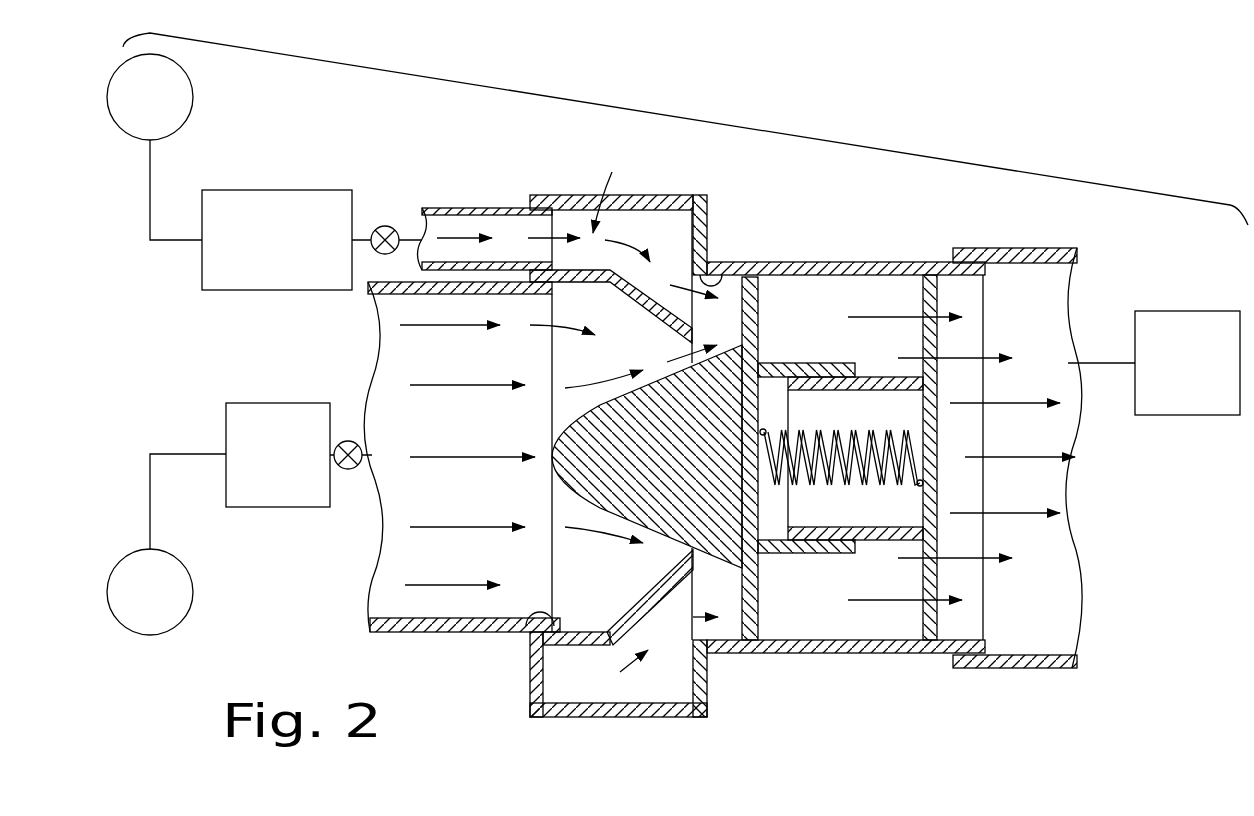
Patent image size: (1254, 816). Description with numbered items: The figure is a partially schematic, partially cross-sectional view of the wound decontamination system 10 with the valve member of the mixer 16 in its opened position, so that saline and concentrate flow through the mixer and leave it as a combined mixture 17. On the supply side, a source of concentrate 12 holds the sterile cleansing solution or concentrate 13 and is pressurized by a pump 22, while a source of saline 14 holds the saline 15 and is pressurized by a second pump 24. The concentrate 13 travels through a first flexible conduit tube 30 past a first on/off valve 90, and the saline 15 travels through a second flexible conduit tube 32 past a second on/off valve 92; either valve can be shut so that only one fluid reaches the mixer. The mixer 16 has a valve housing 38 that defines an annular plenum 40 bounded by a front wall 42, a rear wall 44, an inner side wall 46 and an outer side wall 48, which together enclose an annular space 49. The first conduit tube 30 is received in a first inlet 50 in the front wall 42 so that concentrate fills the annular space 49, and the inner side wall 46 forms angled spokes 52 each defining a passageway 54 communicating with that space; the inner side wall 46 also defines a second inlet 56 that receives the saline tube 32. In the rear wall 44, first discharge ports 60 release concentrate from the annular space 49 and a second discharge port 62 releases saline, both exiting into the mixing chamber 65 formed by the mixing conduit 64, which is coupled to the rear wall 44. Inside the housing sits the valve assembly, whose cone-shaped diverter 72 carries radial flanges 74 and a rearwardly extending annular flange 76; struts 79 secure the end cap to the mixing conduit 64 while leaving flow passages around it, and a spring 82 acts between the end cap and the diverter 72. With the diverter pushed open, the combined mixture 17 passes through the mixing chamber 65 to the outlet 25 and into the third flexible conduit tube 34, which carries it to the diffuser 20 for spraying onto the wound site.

The system 10 is at (688, 119).
The source of concentrate 12 is at (330, 190).
The concentrate 13 is at (462, 238).
The source of saline 14 is at (244, 403).
The saline 15 is at (597, 385).
The mixer 16 is at (765, 683).
The saline/concentrate mixture 17 is at (866, 313).
The diffuser 20 is at (1165, 311).
The pump 22 is at (193, 100).
The pump 24 is at (193, 596).
The outlet 25 is at (968, 300).
The first flexible conduit tube 30 is at (462, 208).
The second flexible conduit tube 32 is at (412, 632).
The third flexible conduit tube 34 is at (1025, 250).
The valve housing 38 is at (703, 404).
The annular plenum 40 is at (655, 193).
The front wall 42 is at (533, 680).
The rear wall 44 is at (705, 690).
The inner side wall 46 is at (578, 638).
The outer side wall 48 is at (575, 717).
The annular space 49 is at (612, 189).
The first inlet 50 is at (527, 208).
The angled spokes 52 is at (640, 615).
The passageway 54 is at (690, 285).
The second inlet 56 is at (527, 632).
The first discharge ports 60 is at (716, 274).
The second discharge port 62 is at (699, 325).
The mixing conduit 64 is at (830, 262).
The mixing chamber 65 is at (790, 300).
The cone-shaped diverter 72 is at (668, 535).
The flanges 74 is at (752, 300).
The annular flange 76 is at (805, 365).
The struts 79 is at (935, 325).
The spring 82 is at (850, 500).
The first on/off valve 90 is at (385, 225).
The second on/off valve 92 is at (348, 440).